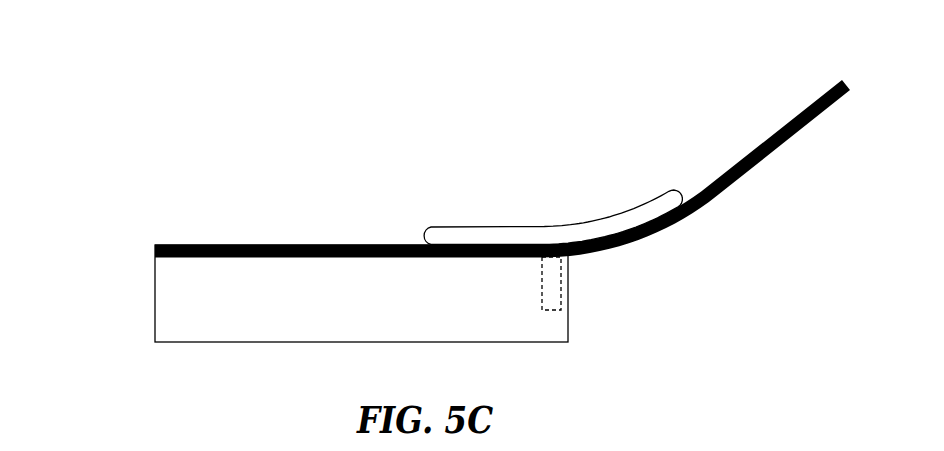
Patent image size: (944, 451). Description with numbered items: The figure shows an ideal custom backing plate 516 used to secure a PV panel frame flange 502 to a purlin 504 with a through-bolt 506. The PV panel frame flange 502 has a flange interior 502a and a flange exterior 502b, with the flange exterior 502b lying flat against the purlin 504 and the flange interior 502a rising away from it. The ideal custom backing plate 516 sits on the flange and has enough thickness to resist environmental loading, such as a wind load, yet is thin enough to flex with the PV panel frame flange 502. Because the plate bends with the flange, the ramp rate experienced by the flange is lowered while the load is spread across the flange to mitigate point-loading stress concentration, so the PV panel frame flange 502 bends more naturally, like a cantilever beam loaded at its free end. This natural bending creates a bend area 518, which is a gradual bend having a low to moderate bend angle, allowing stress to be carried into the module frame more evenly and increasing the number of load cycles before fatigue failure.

The PV panel frame flange 502 is at (447, 168).
The flange interior 502a is at (837, 79).
The flange exterior 502b is at (155, 250).
The purlin 504 is at (155, 325).
The through-bolt 506 is at (542, 277).
The ideal custom backing plate 516 is at (505, 227).
The bend area 518 is at (600, 256).